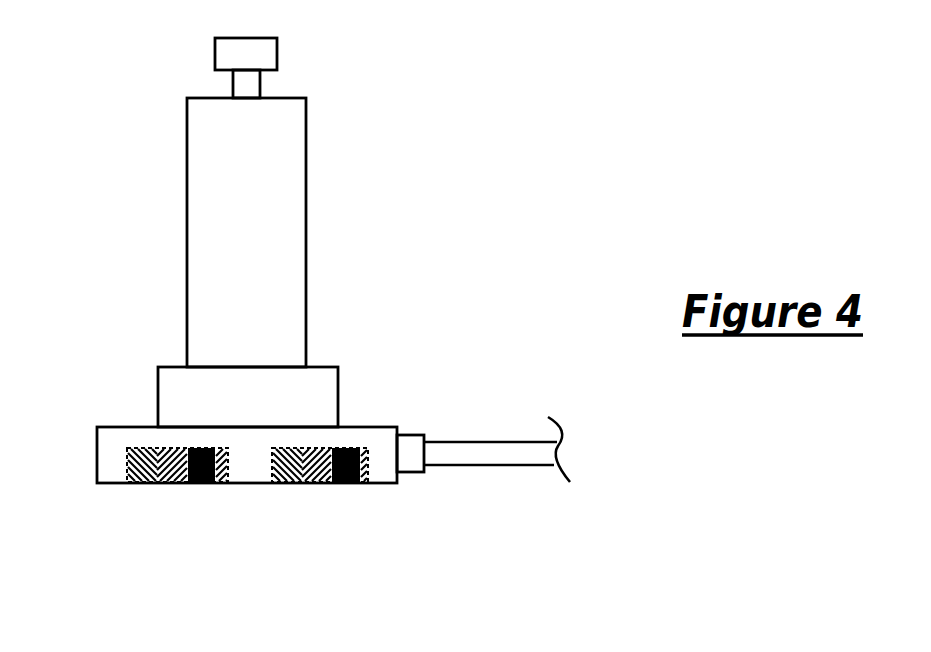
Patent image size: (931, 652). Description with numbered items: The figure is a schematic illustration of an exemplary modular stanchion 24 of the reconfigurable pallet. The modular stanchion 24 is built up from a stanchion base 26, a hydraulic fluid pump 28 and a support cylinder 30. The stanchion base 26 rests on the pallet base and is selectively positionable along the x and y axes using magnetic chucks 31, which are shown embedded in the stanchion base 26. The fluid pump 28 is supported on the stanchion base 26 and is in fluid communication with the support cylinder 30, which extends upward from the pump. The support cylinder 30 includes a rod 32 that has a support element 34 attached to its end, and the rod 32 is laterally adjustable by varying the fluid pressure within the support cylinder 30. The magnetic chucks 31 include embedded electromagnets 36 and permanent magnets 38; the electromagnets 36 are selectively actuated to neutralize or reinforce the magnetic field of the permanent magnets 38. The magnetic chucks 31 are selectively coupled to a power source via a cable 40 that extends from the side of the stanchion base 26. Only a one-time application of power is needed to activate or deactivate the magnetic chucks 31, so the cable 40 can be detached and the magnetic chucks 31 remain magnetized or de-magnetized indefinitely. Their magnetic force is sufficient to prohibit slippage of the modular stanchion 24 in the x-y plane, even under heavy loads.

The modular stanchion 24 is at (481, 183).
The stanchion base 26 is at (380, 426).
The hydraulic fluid pump 28 is at (341, 392).
The support cylinder 30 is at (306, 203).
The magnetic chucks 31 is at (280, 485).
The rod 32 is at (260, 82).
The support element 34 is at (258, 37).
The electromagnets 36 is at (150, 485).
The permanent magnets 38 is at (202, 485).
The cable 40 is at (513, 466).